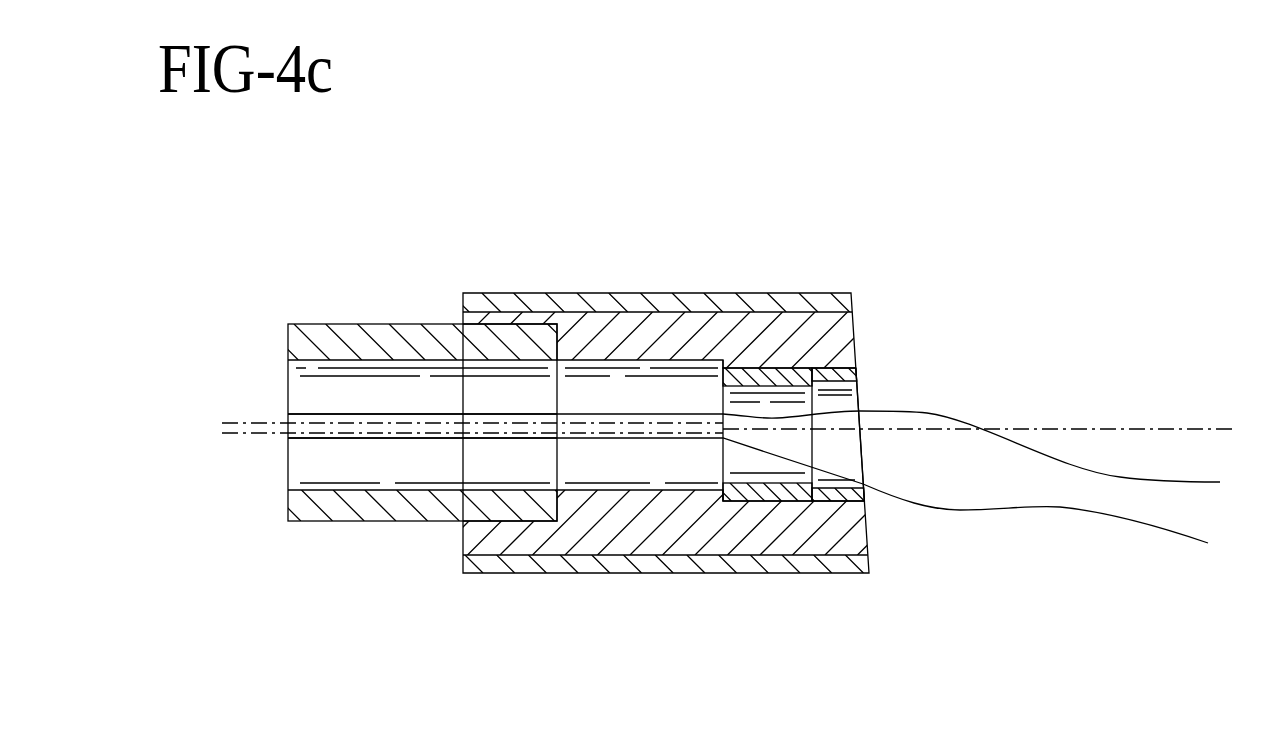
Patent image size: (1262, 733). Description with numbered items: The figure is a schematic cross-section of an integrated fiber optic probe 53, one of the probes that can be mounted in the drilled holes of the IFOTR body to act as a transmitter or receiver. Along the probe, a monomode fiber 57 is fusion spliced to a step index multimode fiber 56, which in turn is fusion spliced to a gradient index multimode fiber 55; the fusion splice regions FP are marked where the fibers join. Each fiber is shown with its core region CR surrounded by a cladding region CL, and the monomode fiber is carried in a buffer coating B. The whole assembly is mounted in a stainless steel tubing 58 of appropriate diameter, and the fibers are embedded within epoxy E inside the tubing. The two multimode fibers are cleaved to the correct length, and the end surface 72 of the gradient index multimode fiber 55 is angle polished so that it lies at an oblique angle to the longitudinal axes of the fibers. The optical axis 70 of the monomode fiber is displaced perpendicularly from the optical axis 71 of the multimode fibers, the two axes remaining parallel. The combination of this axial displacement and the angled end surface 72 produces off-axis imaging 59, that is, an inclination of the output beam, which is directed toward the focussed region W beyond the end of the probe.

The integrated fiber optic probe 53 is at (362, 605).
The gradient index multimode fiber 55 is at (847, 346).
The step index multimode fiber 56 is at (763, 346).
The monomode fiber 57 is at (633, 338).
The stainless steel tubing 58 is at (528, 293).
The off-axis imaging 59 is at (1117, 497).
The optical axis of the monomode fiber 70 is at (252, 423).
The optical axis of the multimode fibers 71 is at (1220, 423).
The end surface 72 is at (860, 388).
The buffer coating B is at (370, 342).
The epoxy E is at (582, 332).
The fusion splice regions FP is at (722, 338).
The focussed region W is at (1120, 455).
The cladding regions CL is at (598, 460).
The core region CR is at (652, 447).